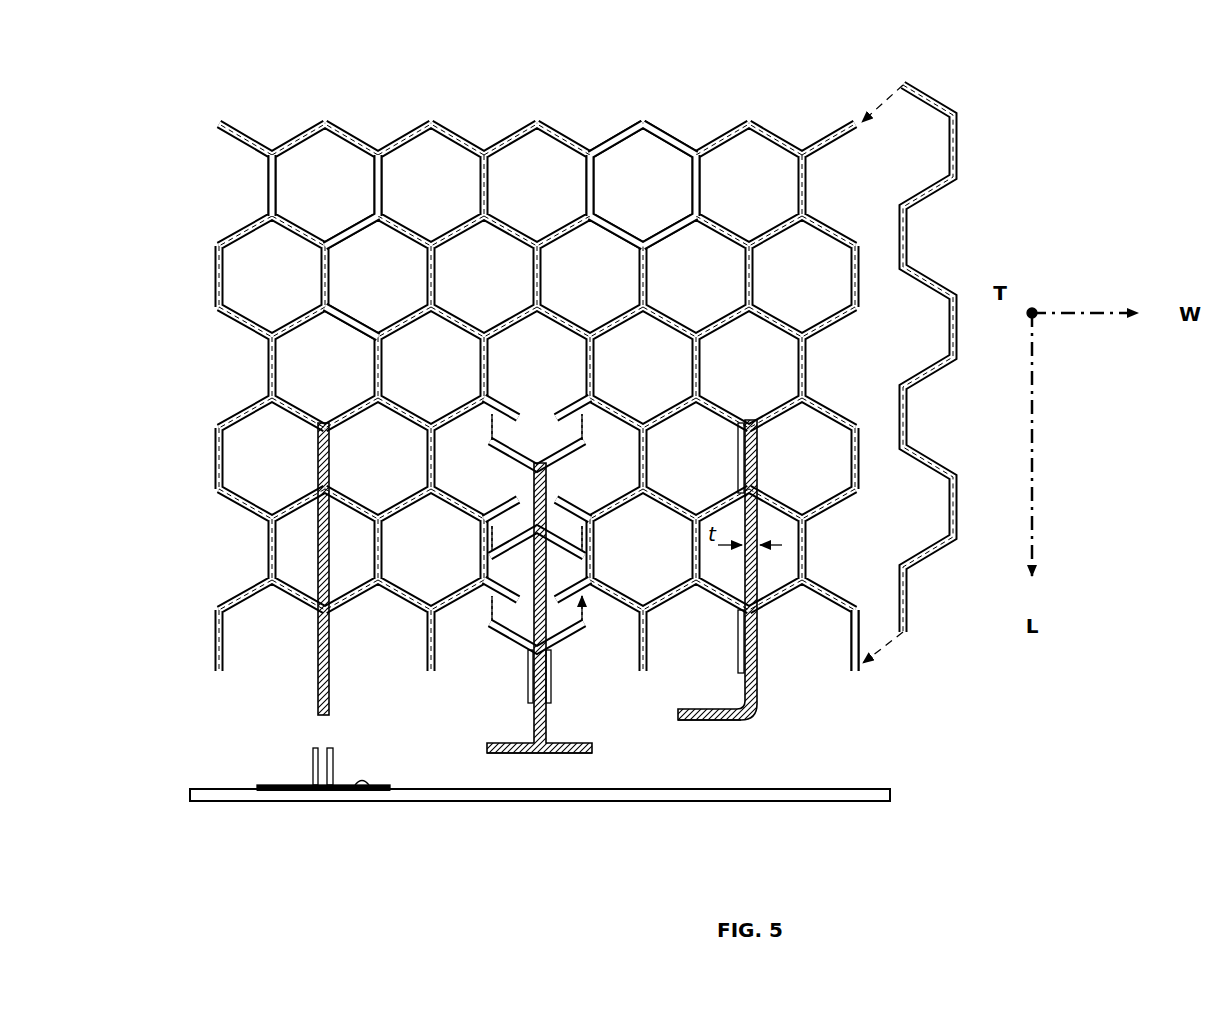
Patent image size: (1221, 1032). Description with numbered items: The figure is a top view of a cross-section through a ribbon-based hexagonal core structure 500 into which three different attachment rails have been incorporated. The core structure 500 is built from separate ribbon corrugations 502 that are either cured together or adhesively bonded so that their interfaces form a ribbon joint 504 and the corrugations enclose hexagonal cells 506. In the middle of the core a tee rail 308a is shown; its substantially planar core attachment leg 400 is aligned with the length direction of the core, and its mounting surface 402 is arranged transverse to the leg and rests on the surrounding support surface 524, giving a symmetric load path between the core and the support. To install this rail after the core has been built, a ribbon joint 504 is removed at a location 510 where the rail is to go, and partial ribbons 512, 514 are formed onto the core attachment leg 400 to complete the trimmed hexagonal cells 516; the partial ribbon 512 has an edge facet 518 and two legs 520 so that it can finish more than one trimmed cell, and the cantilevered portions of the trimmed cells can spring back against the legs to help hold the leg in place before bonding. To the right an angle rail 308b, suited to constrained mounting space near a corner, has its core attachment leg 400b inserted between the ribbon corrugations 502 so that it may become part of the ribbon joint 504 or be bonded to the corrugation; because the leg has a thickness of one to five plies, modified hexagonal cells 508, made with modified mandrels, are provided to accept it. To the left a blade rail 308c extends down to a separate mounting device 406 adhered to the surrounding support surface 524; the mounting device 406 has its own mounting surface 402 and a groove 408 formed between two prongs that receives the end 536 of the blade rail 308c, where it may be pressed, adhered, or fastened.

The core structure 500 is at (266, 124).
The ribbon corrugations 502 is at (955, 140).
The ribbon joint 504 is at (392, 183).
The hexagonal cells 506 is at (628, 185).
The modified hexagonal cells 508 is at (813, 482).
The location 510 is at (469, 672).
The partial ribbon 512 is at (567, 640).
The partial ribbon 514 is at (505, 553).
The trimmed hexagonal cells 516 is at (508, 500).
The edge facet 518 is at (563, 483).
The legs 520 is at (563, 537).
The surrounding support surface 524 is at (890, 795).
The end 536 is at (328, 712).
The core attachment leg 400 is at (405, 624).
The core attachment leg 400b is at (740, 560).
The mounting surface 402 is at (285, 792).
The mounting device 406 is at (378, 790).
The groove 408 is at (322, 730).
The tee rail 308a is at (547, 766).
The angle rail 308b is at (786, 698).
The blade rail 308c is at (313, 683).